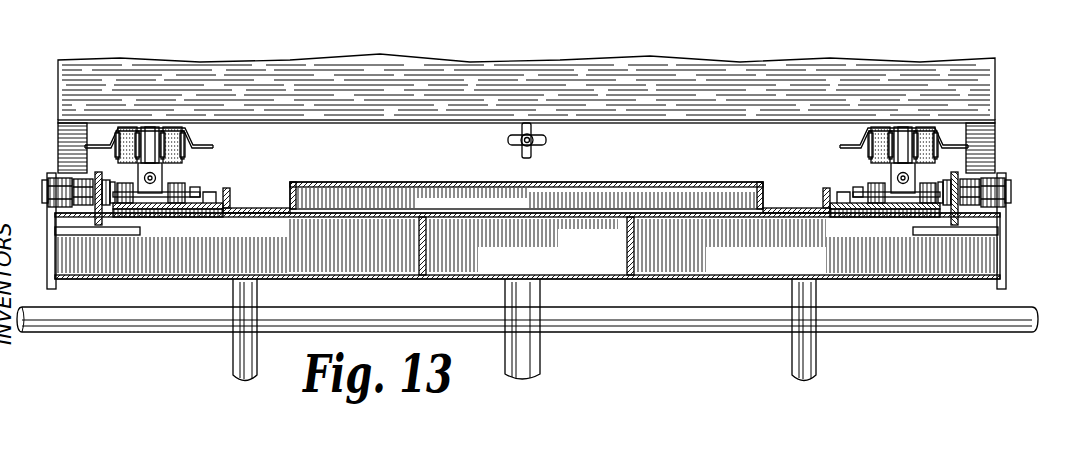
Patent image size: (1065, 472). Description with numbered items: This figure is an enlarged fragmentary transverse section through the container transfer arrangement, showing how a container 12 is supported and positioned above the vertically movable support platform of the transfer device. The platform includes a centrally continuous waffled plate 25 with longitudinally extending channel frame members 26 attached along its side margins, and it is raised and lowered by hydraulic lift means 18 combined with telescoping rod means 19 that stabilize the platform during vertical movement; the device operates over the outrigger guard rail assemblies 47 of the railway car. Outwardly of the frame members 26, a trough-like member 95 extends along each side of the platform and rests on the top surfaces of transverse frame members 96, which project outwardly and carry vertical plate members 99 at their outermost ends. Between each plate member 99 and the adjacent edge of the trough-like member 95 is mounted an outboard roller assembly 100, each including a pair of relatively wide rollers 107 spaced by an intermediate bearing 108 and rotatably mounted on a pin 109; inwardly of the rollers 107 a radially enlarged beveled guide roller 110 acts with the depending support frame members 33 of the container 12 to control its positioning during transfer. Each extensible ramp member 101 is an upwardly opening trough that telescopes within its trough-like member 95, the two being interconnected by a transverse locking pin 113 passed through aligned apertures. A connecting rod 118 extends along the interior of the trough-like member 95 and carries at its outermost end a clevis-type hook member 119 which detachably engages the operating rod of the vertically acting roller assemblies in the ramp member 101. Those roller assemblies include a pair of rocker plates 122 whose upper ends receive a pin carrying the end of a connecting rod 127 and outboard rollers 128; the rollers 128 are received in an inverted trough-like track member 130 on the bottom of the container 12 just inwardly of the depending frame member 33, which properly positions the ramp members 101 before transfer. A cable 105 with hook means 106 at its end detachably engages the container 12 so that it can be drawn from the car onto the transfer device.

The container 12 is at (648, 57).
The hydraulic lift means 18 is at (541, 362).
The telescoping rod means 19 is at (235, 358).
The waffled plate 25 is at (383, 182).
The channel frame members 26 is at (275, 205).
The depending support frame members 33 is at (57, 128).
The outrigger guard rail assemblies 47 is at (633, 335).
The trough-like member 95 is at (162, 205).
The transverse frame members 96 is at (314, 277).
The vertical plate members 99 is at (50, 277).
The roller assemblies 100 is at (50, 162).
The extensible ramp members 101 is at (152, 205).
The cable 105 is at (519, 143).
The hook means 106 is at (547, 140).
The rollers 107 is at (62, 205).
The intermediate bearing 108 is at (72, 218).
The pin 109 is at (43, 188).
The beveled guide roller 110 is at (93, 236).
The transverse locking pin 113 is at (160, 212).
The connecting rod 118 is at (156, 180).
The clevis-type hook member 119 is at (158, 178).
The rocker plates 122 is at (143, 127).
The connecting rod 127 is at (155, 127).
The outboard rollers 128 is at (127, 130).
The inverted trough-like track member 130 is at (200, 142).